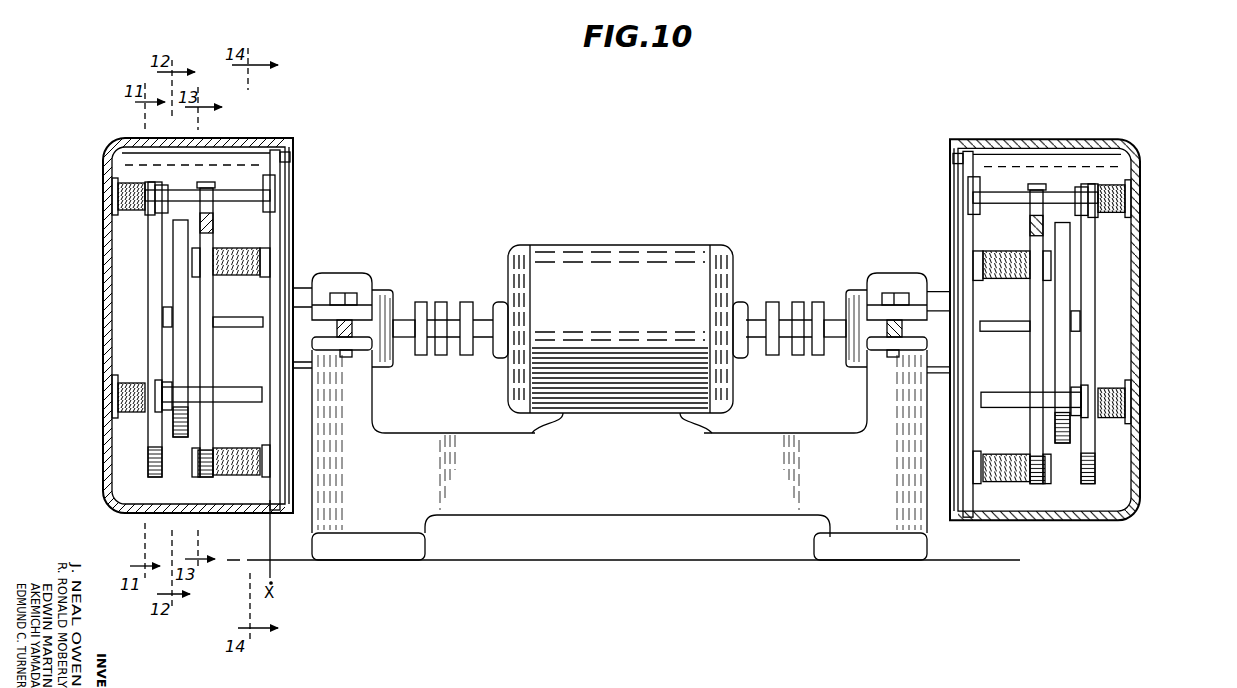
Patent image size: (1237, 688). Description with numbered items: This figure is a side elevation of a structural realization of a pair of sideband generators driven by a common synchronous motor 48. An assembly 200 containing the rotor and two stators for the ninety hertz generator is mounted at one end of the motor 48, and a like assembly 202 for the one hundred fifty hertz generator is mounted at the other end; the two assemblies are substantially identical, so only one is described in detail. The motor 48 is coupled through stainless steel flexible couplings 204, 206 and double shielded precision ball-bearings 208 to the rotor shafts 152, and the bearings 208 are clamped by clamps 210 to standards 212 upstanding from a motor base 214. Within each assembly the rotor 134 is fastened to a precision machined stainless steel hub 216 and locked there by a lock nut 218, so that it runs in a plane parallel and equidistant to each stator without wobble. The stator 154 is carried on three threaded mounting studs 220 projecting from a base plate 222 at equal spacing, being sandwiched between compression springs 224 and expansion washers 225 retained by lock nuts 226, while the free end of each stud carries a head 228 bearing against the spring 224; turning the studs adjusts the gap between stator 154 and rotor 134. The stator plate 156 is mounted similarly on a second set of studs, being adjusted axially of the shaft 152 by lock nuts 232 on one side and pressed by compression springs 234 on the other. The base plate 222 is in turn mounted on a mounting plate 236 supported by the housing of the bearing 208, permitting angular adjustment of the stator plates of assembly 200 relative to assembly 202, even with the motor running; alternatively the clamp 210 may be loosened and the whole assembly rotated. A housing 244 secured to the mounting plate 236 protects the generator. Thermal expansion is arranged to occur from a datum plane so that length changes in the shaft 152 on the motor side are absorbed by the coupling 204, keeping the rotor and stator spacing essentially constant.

The motor 48 is at (607, 253).
The rotor 134 is at (182, 437).
The rotor shaft 152 is at (223, 320).
The stator 154 is at (112, 490).
The stator plate 156 is at (248, 417).
The assembly 200 is at (302, 146).
The assembly 202 is at (945, 157).
The flexible coupling 204 is at (442, 302).
The flexible coupling 206 is at (802, 307).
The ball-bearing 208 is at (385, 293).
The clamp 210 is at (348, 285).
The standard 212 is at (355, 410).
The motor base 214 is at (783, 503).
The hub 216 is at (197, 285).
The lock nut 218 is at (168, 313).
The mounting stud 220 is at (245, 192).
The base plate 222 is at (278, 150).
The compression spring 224 is at (138, 214).
The expansion washer 225 is at (145, 195).
The lock nut 226 is at (155, 190).
The head 228 is at (120, 197).
The lock nut 232 is at (185, 263).
The compression spring 234 is at (237, 248).
The mounting plate 236 is at (288, 218).
The housing 244 is at (232, 141).